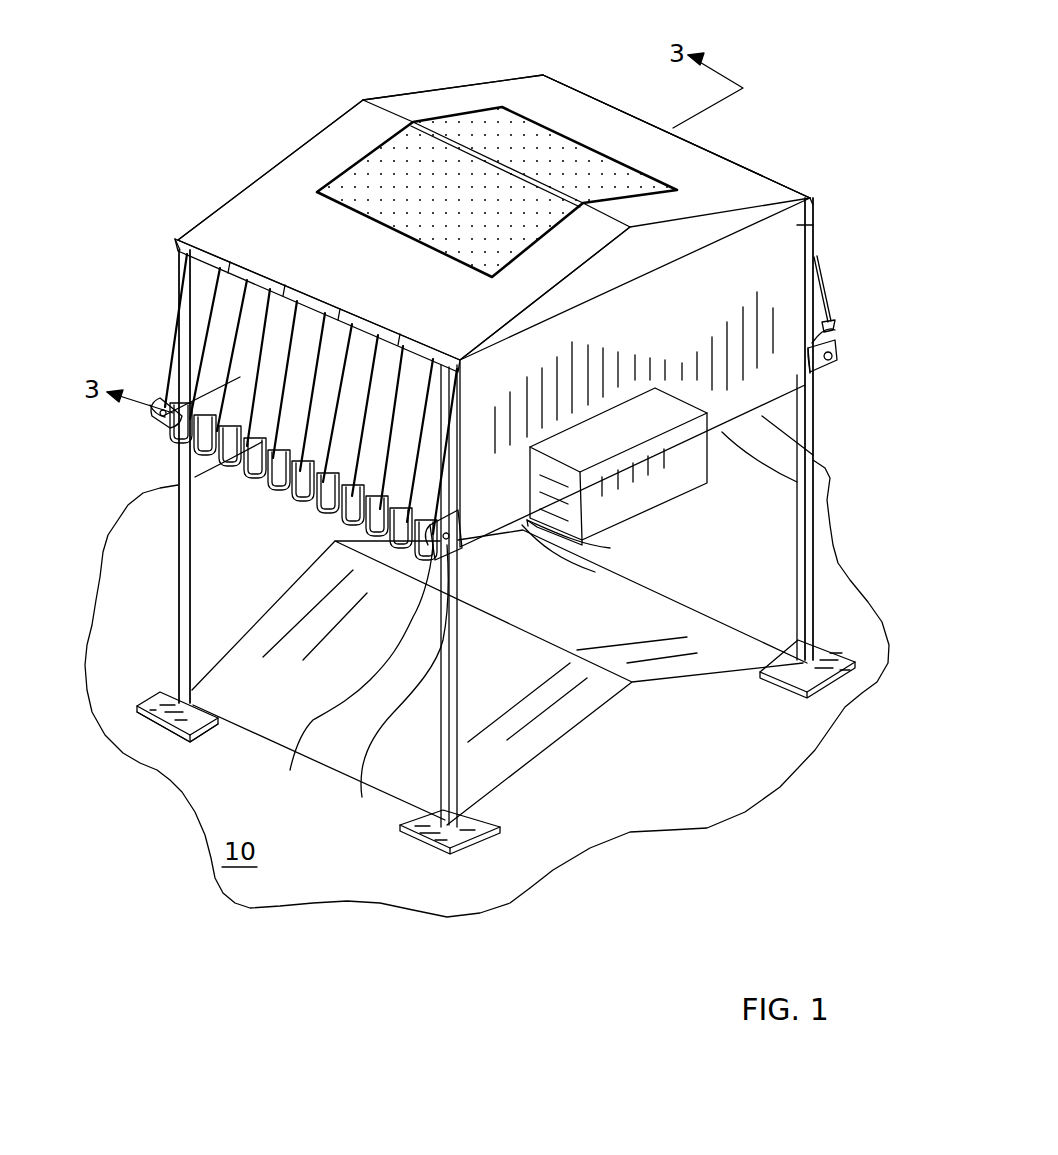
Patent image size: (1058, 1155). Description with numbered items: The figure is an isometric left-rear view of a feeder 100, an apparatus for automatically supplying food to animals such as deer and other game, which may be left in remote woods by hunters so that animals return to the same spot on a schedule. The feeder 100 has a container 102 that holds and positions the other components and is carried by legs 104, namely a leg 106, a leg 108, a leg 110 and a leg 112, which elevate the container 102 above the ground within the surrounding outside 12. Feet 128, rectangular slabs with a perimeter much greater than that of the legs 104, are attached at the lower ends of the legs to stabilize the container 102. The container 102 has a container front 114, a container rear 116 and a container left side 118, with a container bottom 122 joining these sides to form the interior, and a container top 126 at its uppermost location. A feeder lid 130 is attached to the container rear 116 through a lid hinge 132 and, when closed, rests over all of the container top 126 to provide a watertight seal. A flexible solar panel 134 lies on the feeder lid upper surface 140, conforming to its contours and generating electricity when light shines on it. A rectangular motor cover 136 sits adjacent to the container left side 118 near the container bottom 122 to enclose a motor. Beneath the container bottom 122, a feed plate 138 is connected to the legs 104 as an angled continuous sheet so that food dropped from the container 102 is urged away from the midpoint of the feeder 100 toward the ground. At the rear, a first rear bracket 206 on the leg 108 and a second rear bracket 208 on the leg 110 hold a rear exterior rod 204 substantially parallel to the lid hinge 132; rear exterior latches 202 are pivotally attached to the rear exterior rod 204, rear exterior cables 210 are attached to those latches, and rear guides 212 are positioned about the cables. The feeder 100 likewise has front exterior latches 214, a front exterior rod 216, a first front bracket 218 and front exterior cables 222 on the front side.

The outside 12 is at (862, 787).
The feeder 100 is at (566, 80).
The container 102 is at (792, 248).
The legs 104 is at (178, 648).
The leg 106 is at (805, 552).
The leg 108 is at (452, 795).
The leg 110 is at (185, 598).
The leg 112 is at (595, 572).
The container front 114 is at (755, 165).
The container rear 116 is at (430, 472).
The container left side 118 is at (792, 223).
The container bottom 122 is at (762, 416).
The container top 126 is at (817, 217).
The feet 128 is at (582, 540).
The feeder lid 130 is at (622, 135).
The lid hinge 132 is at (177, 242).
The solar panel 134 is at (455, 125).
The motor cover 136 is at (687, 483).
The feed plate 138 is at (592, 722).
The feeder lid upper surface 140 is at (310, 167).
The rear exterior latches 202 is at (168, 417).
The rear exterior rod 204 is at (396, 673).
The first rear bracket 206 is at (348, 678).
The second rear bracket 208 is at (172, 403).
The rear exterior cables 210 is at (188, 303).
The rear guides 212 is at (183, 259).
The front exterior latches 214 is at (832, 338).
The front exterior rod 216 is at (830, 352).
The first front bracket 218 is at (813, 372).
The front exterior cables 222 is at (817, 280).